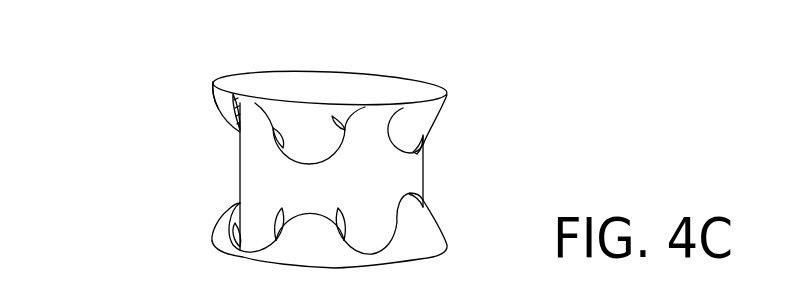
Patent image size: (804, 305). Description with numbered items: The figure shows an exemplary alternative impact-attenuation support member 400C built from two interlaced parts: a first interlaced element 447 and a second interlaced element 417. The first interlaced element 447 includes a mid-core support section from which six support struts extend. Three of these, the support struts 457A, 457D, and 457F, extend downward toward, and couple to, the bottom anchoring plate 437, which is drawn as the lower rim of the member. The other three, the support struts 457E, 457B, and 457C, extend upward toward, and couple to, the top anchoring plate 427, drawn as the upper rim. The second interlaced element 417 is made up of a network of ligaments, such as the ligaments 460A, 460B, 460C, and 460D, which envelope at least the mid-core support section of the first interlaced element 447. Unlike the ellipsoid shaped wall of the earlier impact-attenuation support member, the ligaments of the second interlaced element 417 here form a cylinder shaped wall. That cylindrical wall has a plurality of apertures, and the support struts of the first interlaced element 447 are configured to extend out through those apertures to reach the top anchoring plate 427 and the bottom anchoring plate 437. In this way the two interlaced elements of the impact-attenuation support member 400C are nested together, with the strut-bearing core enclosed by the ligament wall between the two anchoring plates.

The impact-attenuation support member 400C is at (106, 113).
The second interlaced element 417 is at (421, 172).
The top anchoring plate 427 is at (387, 80).
The bottom anchoring plate 437 is at (403, 266).
The first interlaced element 447 is at (220, 105).
The support strut 457A is at (300, 234).
The support strut 457B is at (305, 128).
The support strut 457C is at (427, 121).
The support strut 457D is at (427, 231).
The support strut 457E is at (232, 114).
The support strut 457F is at (228, 221).
The ligament 460A is at (218, 83).
The ligament 460B is at (423, 146).
The edge 460C is at (342, 238).
The edge 460D is at (423, 203).